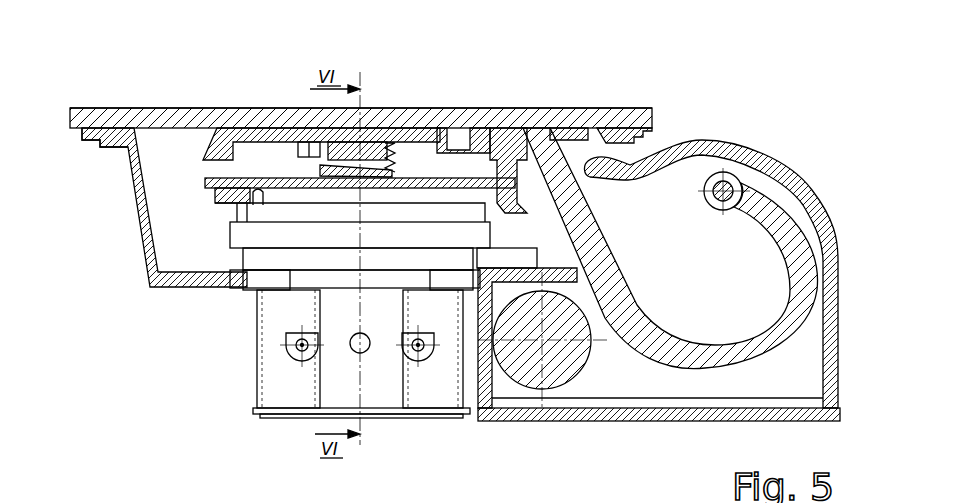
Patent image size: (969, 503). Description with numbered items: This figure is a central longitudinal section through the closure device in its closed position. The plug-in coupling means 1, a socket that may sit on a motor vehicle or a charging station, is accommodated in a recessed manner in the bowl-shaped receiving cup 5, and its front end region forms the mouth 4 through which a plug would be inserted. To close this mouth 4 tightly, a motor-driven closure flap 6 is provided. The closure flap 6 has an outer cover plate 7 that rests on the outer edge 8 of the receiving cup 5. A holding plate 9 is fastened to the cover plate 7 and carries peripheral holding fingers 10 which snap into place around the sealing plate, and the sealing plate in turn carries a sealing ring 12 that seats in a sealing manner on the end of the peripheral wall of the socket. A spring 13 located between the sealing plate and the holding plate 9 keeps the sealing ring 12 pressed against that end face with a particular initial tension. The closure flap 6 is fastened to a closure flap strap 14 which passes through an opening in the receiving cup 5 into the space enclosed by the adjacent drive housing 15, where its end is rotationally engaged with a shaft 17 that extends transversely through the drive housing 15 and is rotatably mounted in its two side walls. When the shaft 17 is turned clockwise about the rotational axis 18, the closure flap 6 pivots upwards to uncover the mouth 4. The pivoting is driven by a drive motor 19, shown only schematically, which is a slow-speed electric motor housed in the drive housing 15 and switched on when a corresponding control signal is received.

The plug-in coupling means 1 is at (453, 137).
The mouth 4 is at (258, 200).
The receiving cup 5 is at (137, 212).
The closure flap 6 is at (543, 106).
The cover plate 7 is at (498, 118).
The outer edge 8 is at (107, 137).
The holding plate 9 is at (263, 137).
The holding fingers 10 is at (553, 128).
The sealing ring 12 is at (223, 203).
The spring 13 is at (393, 142).
The closure flap strap 14 is at (607, 258).
The drive housing 15 is at (798, 190).
The shaft 17 is at (730, 186).
The rotational axis 18 is at (718, 183).
The drive motor 19 is at (563, 367).